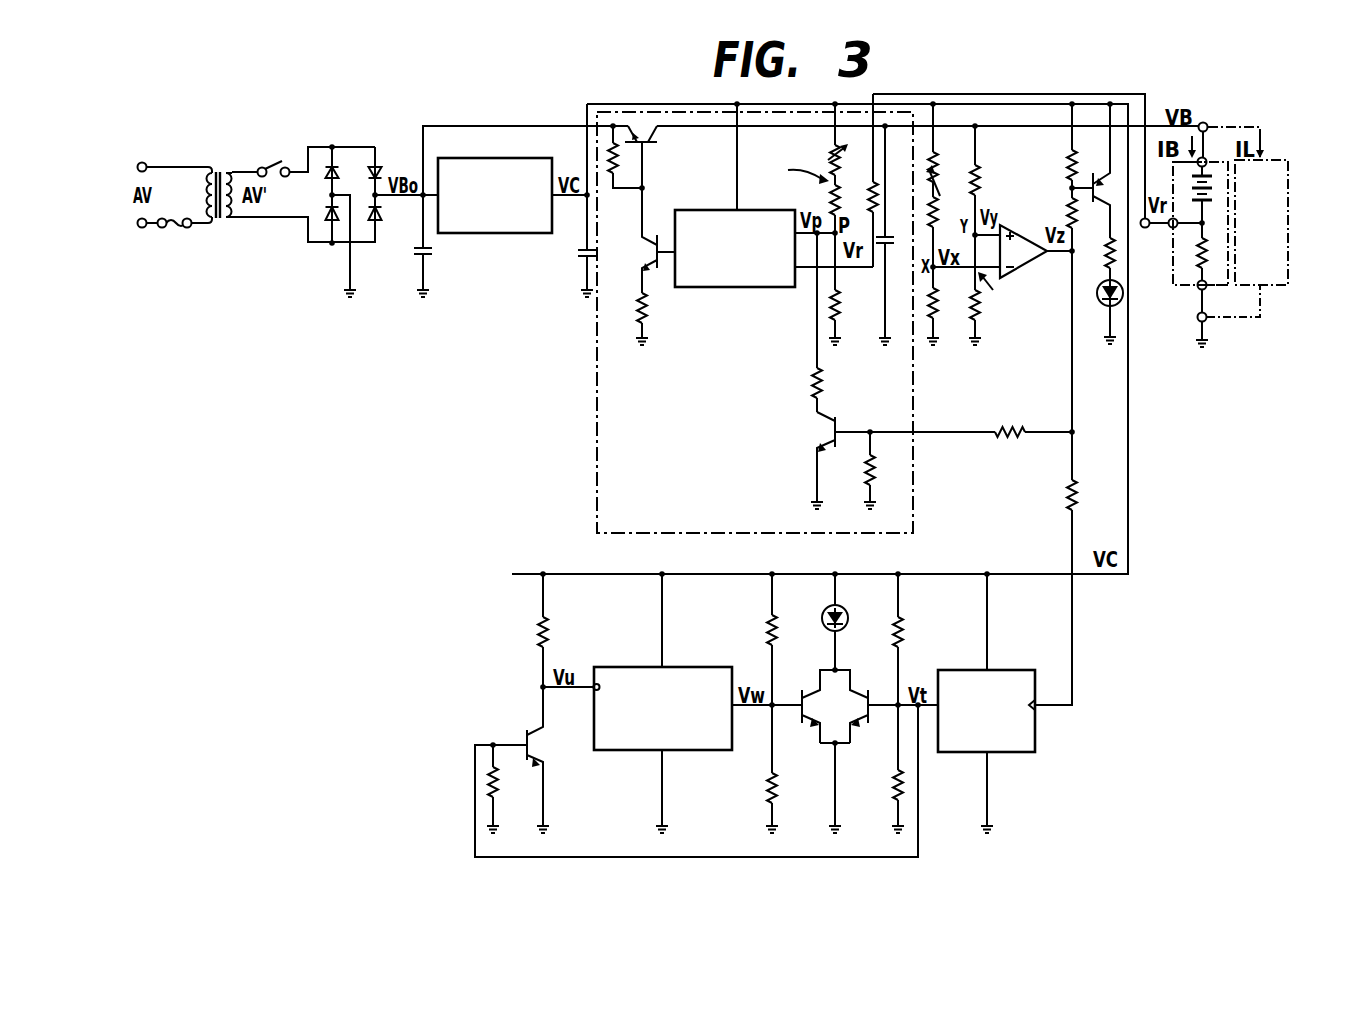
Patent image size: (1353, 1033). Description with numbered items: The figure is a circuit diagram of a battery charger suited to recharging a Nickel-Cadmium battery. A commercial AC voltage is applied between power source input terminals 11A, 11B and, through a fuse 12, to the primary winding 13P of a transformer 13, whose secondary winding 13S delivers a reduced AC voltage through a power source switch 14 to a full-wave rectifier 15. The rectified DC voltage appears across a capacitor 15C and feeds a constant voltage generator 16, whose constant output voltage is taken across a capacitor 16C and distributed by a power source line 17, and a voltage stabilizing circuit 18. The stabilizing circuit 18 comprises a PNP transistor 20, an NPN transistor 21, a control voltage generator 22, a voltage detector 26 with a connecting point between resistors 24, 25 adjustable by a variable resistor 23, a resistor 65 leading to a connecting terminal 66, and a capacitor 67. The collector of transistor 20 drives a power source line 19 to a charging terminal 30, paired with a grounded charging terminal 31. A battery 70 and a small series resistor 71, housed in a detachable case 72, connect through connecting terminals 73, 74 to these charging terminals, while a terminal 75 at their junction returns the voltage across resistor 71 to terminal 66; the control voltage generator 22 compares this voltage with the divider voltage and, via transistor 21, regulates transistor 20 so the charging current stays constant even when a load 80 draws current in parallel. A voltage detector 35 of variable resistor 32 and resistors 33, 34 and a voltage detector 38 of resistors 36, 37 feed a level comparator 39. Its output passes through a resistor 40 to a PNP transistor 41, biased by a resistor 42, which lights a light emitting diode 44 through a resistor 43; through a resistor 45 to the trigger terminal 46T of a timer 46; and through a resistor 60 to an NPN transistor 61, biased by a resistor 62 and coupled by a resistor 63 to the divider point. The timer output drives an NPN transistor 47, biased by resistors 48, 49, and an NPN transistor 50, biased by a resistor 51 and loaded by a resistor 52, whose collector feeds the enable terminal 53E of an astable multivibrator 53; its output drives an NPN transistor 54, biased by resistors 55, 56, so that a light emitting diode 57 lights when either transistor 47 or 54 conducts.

The power source input terminal 11A is at (145, 162).
The power source input terminal 11B is at (142, 228).
The fuse 12 is at (172, 220).
The transformer 13 is at (218, 165).
The primary winding 13P is at (204, 228).
The secondary winding 13S is at (235, 226).
The power source switch 14 is at (278, 164).
The full-wave rectifier 15 is at (333, 250).
The capacitor 15C is at (432, 250).
The constant voltage generator 16 is at (452, 155).
The capacitor 16C is at (578, 258).
The power source line 17 is at (587, 117).
The voltage stabilizing circuit 18 is at (597, 388).
The power source line 19 is at (1043, 126).
The PNP transistor 20 is at (652, 145).
The NPN transistor 21 is at (640, 252).
The control voltage generator 22 is at (712, 208).
The variable resistor 23 is at (825, 150).
The resistor 24 is at (826, 200).
The resistor 25 is at (842, 305).
The voltage detector 26 is at (800, 169).
The charging terminal 30 is at (1206, 122).
The charging terminal 31 is at (1210, 320).
The variable resistor 32 is at (940, 160).
The resistor 33 is at (940, 220).
The resistor 34 is at (940, 315).
The voltage detector 35 is at (942, 190).
The resistor 36 is at (982, 170).
The resistor 37 is at (982, 310).
The voltage detector 38 is at (996, 291).
The level comparator 39 is at (1010, 229).
The resistor 40 is at (1077, 212).
The PNP transistor 41 is at (1088, 168).
The resistor 42 is at (1068, 160).
The resistor 43 is at (1105, 250).
The light emitting diode 44 is at (1098, 308).
The resistor 45 is at (1065, 495).
The timer 46 is at (1012, 670).
The trigger terminal 46T is at (1037, 708).
The NPN transistor 47 is at (872, 690).
The resistor 48 is at (906, 632).
The resistor 49 is at (890, 787).
The NPN transistor 50 is at (522, 737).
The resistor 51 is at (503, 778).
The resistor 52 is at (538, 628).
The astable multivibrator 53 is at (690, 667).
The enable terminal 53E is at (592, 690).
The NPN transistor 54 is at (798, 690).
The resistor 55 is at (762, 628).
The resistor 56 is at (778, 788).
The light emitting diode 57 is at (822, 612).
The resistor 60 is at (1003, 428).
The NPN transistor 61 is at (826, 434).
The resistor 62 is at (864, 470).
The resistor 63 is at (810, 388).
The resistor 65 is at (870, 186).
The connecting terminal 66 is at (1146, 228).
The capacitor 67 is at (889, 250).
The battery 70 is at (1214, 222).
The resistor 71 is at (1199, 258).
The case 72 is at (1173, 272).
The connecting terminal 73 is at (1206, 163).
The connecting terminal 74 is at (1207, 290).
The terminal 75 is at (1173, 215).
The load 80 is at (1276, 288).